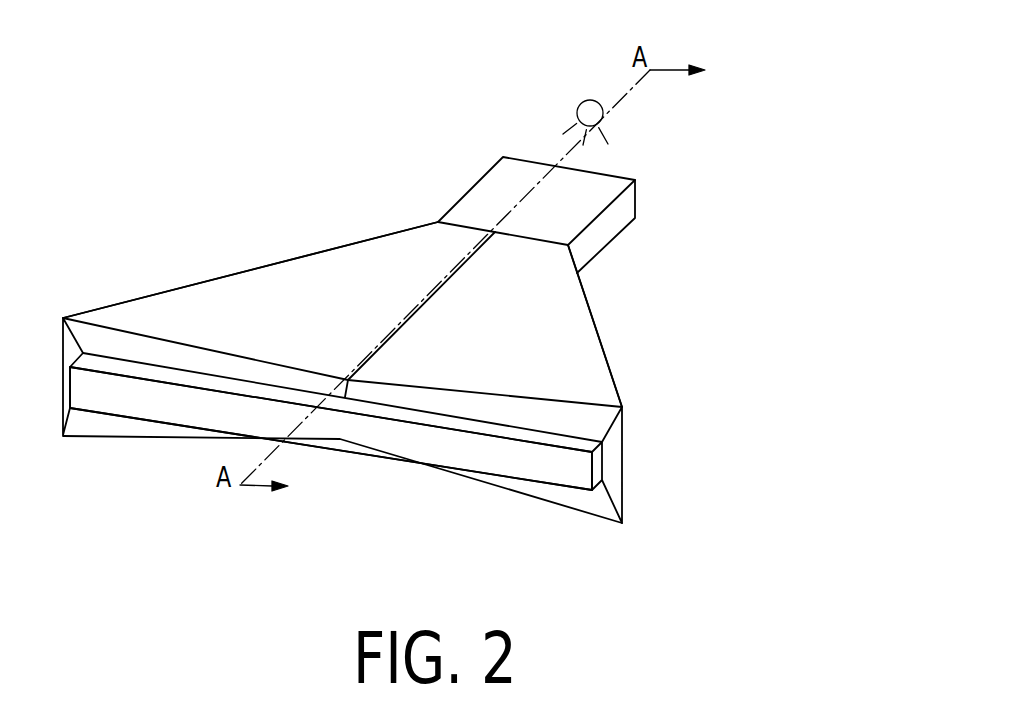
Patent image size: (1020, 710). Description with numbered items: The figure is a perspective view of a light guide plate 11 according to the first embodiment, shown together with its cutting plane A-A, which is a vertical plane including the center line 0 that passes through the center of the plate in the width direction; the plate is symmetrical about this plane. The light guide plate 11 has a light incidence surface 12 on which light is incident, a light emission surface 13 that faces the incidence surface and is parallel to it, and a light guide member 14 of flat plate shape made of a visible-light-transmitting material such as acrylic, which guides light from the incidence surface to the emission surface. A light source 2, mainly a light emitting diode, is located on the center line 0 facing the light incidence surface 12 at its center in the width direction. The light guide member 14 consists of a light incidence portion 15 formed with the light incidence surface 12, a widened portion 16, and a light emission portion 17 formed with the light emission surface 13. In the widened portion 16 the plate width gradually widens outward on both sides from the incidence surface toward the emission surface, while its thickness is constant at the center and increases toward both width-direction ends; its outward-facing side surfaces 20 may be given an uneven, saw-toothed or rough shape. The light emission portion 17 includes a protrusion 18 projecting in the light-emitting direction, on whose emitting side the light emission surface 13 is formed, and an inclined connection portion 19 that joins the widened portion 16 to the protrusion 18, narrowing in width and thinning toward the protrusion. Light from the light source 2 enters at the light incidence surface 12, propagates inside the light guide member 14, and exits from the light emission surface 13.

The center line 0 is at (520, 206).
The light source 2 is at (575, 91).
The light guide plate 11 is at (437, 306).
The light incidence surface 12 is at (517, 146).
The light emission surface 13 is at (496, 467).
The light guide member 14 is at (437, 256).
The light incidence portion 15 is at (585, 205).
The widened portion 16 is at (583, 333).
The light emission portion 17 is at (411, 454).
The protrusion 18 is at (695, 403).
The inclined connection portion 19 is at (600, 425).
The side surfaces 20 is at (275, 249).